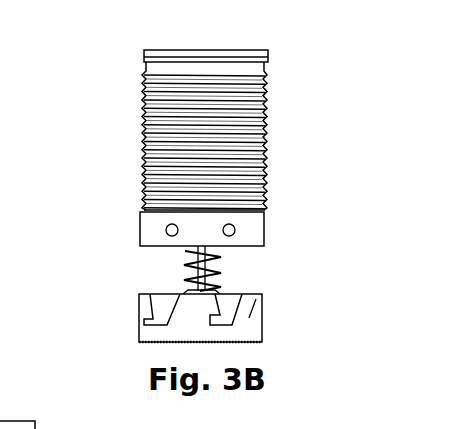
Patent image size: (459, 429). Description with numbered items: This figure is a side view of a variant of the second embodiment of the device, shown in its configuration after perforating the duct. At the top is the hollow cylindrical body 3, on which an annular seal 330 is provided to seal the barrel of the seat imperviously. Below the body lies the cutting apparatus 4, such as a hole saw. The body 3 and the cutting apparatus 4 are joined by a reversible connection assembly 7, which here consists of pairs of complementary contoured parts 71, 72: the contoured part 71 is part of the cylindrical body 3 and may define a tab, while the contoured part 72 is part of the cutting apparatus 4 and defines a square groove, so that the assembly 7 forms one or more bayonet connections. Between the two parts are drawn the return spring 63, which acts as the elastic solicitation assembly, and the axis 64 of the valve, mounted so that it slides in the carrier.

The hollow cylindrical body 3 is at (138, 154).
The annular seal 330 is at (276, 58).
The reversible connection assembly 7 is at (93, 217).
The contoured part 71 is at (166, 231).
The axis 64 is at (216, 268).
The return spring 63 is at (208, 290).
The contoured part 72 is at (153, 298).
The cutting apparatus 4 is at (124, 333).